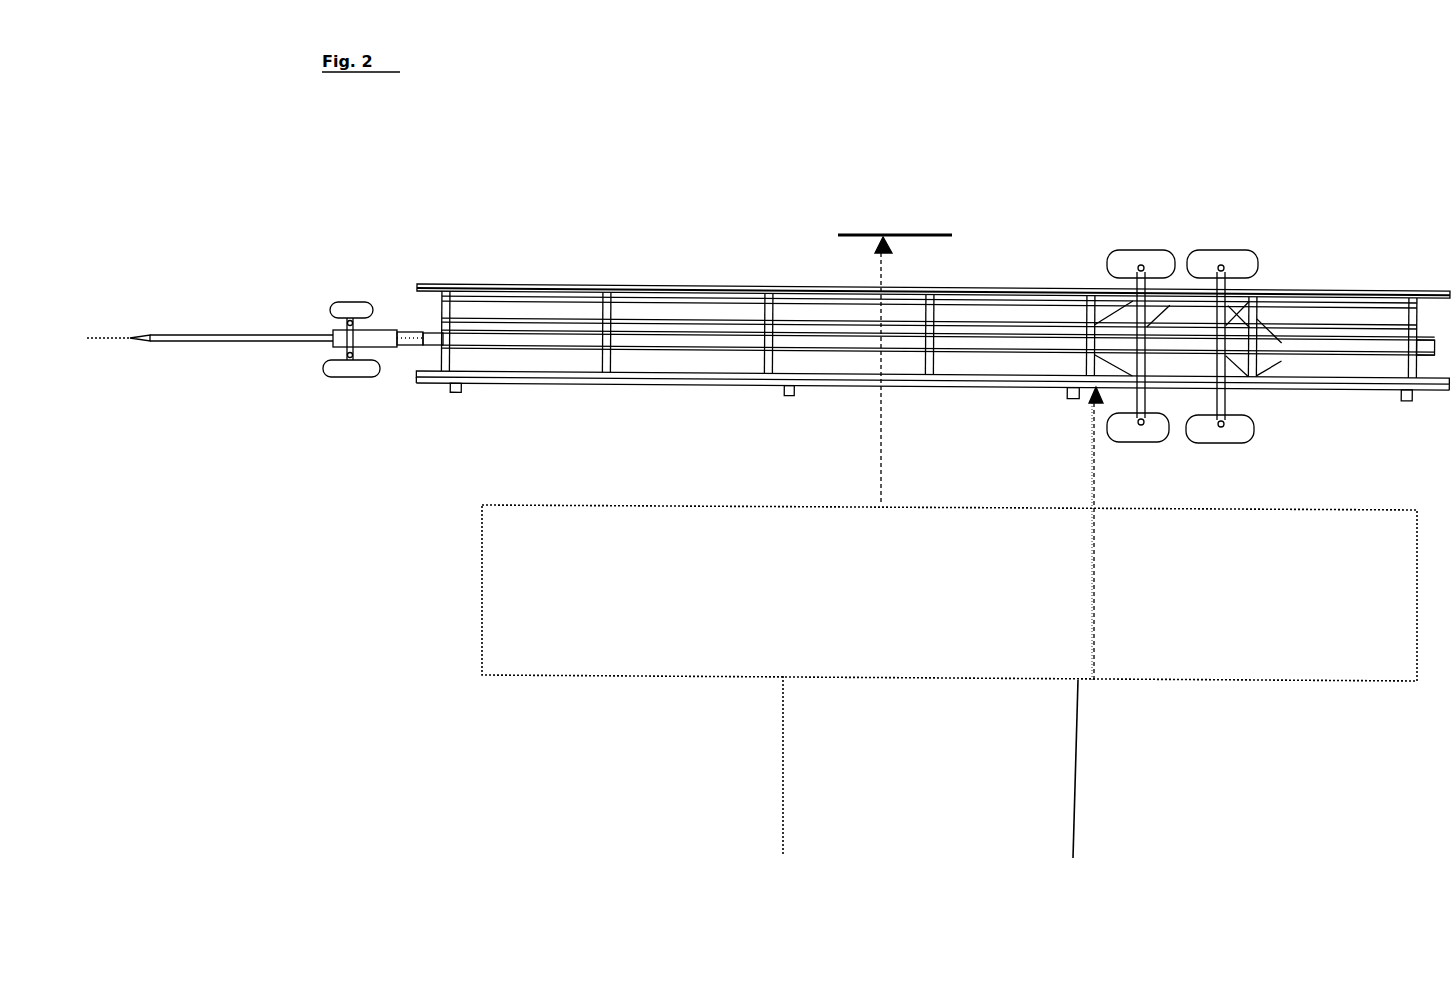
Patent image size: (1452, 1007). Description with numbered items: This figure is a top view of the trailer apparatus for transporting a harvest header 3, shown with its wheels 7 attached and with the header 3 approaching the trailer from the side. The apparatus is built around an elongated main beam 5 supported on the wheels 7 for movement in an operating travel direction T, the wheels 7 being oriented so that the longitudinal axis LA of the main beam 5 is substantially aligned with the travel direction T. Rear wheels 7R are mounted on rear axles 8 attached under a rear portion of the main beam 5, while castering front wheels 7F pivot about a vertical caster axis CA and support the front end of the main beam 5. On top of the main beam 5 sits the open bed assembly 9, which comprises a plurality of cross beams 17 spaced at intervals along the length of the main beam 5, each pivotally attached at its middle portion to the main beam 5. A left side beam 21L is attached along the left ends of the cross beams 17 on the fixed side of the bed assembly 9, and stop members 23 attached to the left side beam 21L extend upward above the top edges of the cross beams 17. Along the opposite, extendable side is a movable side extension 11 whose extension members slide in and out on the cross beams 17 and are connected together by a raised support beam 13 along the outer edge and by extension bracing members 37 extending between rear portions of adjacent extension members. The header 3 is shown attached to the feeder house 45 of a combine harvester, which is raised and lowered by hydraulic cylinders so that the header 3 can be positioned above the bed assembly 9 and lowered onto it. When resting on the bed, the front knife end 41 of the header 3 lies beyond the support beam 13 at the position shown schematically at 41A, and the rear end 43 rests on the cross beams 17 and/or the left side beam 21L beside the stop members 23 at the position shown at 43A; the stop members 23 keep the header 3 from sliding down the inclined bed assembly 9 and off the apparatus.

The harvest header 3 is at (480, 586).
The main beam 5 is at (478, 349).
The wheels 7 is at (350, 301).
The castering front wheels 7F is at (350, 367).
The rear wheels 7R is at (1148, 249).
The rear axles 8 is at (1133, 284).
The bed assembly 9 is at (903, 334).
The side extension 11 is at (607, 283).
The support beam 13 is at (712, 283).
The cross beams 17 is at (770, 362).
The left side beam 21L is at (743, 384).
The stop members 23 is at (528, 380).
The extension bracing members 37 is at (1344, 320).
The front knife end 41 is at (912, 506).
The front end position 41A is at (902, 233).
The rear end 43 is at (1132, 683).
The rear end position 43A is at (1107, 391).
The feeder house 45 is at (1072, 760).
The longitudinal axis LA is at (170, 334).
The caster axis CA is at (350, 338).
The operating travel direction T is at (142, 410).